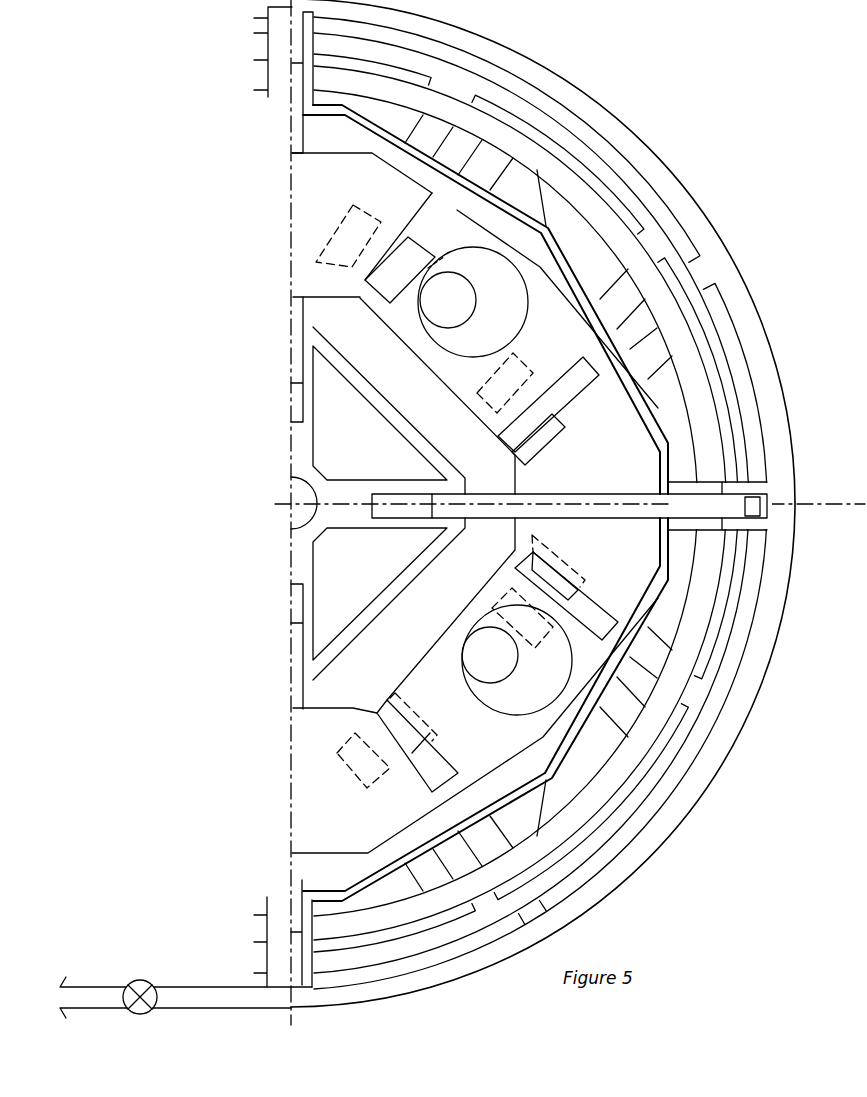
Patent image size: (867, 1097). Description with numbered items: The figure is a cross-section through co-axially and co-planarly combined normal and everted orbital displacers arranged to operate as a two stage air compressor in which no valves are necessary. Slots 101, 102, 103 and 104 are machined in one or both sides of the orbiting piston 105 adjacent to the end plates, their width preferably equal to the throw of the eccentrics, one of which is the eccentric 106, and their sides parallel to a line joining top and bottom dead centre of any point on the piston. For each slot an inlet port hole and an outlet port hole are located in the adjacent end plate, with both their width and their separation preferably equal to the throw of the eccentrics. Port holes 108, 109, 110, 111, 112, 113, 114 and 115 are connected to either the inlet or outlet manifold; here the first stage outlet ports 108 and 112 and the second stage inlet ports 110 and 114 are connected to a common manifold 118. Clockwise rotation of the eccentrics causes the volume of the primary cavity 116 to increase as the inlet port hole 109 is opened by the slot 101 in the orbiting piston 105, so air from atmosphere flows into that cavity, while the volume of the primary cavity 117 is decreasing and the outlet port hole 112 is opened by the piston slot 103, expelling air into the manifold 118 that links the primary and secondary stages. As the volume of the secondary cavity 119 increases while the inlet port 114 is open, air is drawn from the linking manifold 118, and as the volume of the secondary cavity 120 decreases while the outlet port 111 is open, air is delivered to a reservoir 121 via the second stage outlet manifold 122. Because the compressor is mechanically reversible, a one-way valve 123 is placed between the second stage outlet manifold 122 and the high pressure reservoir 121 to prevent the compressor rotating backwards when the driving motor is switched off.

The slot 101 is at (406, 236).
The slot 102 is at (548, 404).
The slot 103 is at (566, 596).
The slot 104 is at (417, 746).
The orbiting piston 105 is at (535, 503).
The eccentric 106 is at (473, 302).
The first stage outlet port 108 is at (348, 236).
The inlet port hole 109 is at (405, 270).
The second stage inlet port 110 is at (505, 383).
The outlet port 111 is at (538, 439).
The first stage outlet port hole 112 is at (558, 567).
The port hole 113 is at (517, 651).
The second stage inlet port 114 is at (410, 723).
The port hole 115 is at (363, 760).
The primary cavity 116 is at (475, 266).
The primary cavity 117 is at (475, 737).
The common manifold 118 is at (650, 237).
The secondary cavity 119 is at (414, 609).
The secondary cavity 120 is at (414, 396).
The reservoir 121 is at (169, 997).
The second stage outlet manifold 122 is at (705, 268).
The one-way valve 123 is at (145, 984).